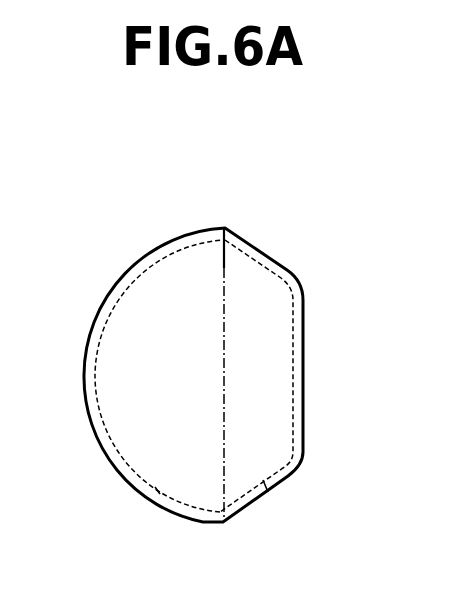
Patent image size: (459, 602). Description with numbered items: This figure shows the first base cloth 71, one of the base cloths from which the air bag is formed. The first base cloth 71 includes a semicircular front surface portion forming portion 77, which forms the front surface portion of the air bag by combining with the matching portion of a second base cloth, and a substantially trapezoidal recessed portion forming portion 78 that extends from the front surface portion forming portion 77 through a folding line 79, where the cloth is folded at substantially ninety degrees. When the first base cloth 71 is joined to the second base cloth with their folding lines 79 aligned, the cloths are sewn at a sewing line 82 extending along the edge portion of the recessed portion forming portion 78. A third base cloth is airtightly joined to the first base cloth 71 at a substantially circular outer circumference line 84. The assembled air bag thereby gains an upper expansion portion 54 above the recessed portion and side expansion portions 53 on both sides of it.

The first base cloth 71 is at (178, 237).
The upper expansion portion 54 is at (208, 267).
The folding line 79 is at (225, 293).
The front surface portion forming portion 77 is at (150, 347).
The recessed portion forming portion 78 is at (275, 337).
The side expansion portion 53 is at (153, 388).
The outer circumference line 84 is at (158, 495).
The sewing line 82 is at (265, 485).